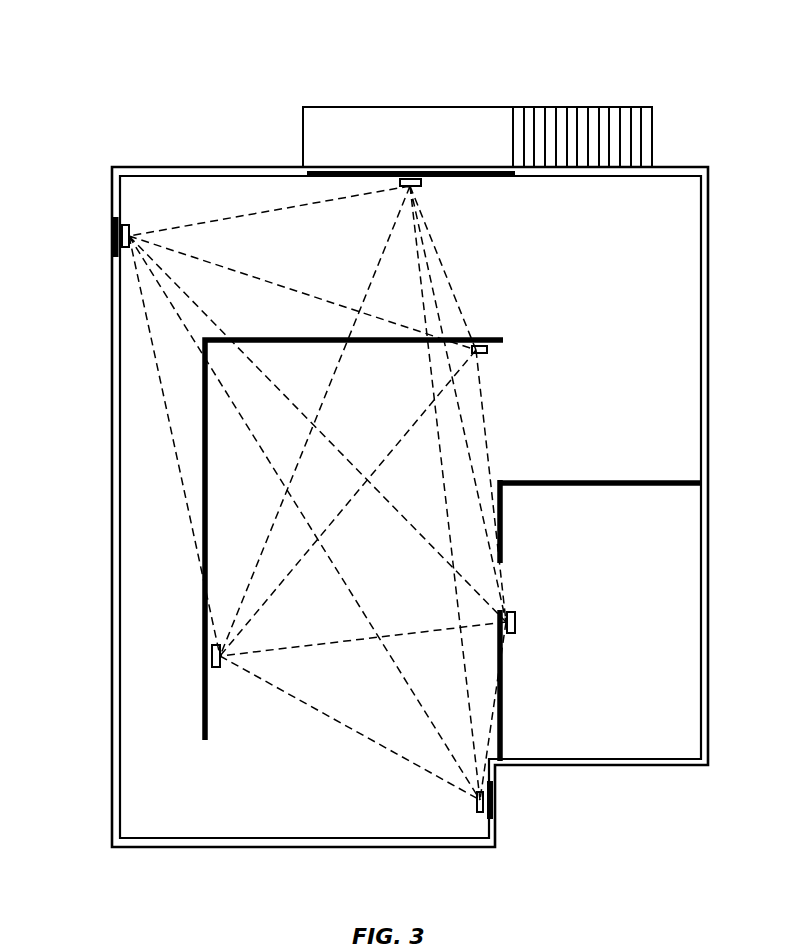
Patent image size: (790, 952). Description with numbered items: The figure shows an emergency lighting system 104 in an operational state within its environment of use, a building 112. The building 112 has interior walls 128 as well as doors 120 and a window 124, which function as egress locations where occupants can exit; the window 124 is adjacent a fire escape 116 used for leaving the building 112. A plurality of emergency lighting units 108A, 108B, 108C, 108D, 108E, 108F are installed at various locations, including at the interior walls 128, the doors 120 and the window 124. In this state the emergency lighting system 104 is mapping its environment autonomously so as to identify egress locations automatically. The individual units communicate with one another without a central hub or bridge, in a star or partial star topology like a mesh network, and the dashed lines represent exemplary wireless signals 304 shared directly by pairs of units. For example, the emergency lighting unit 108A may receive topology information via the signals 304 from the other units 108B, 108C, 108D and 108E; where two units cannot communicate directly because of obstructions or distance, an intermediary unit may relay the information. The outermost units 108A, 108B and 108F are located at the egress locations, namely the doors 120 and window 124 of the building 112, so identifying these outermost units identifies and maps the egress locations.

The emergency lighting system 104 is at (277, 58).
The building 112 is at (245, 166).
The fire escape 116 is at (393, 147).
The window 124 is at (494, 176).
The door 120 is at (112, 236).
The interior wall 128 is at (315, 344).
The signal 304 is at (220, 265).
The emergency lighting unit 108A is at (405, 188).
The emergency lighting unit 108B is at (122, 222).
The emergency lighting unit 108C is at (483, 356).
The emergency lighting unit 108D is at (516, 622).
The emergency lighting unit 108E is at (222, 665).
The emergency lighting unit 108F is at (477, 807).